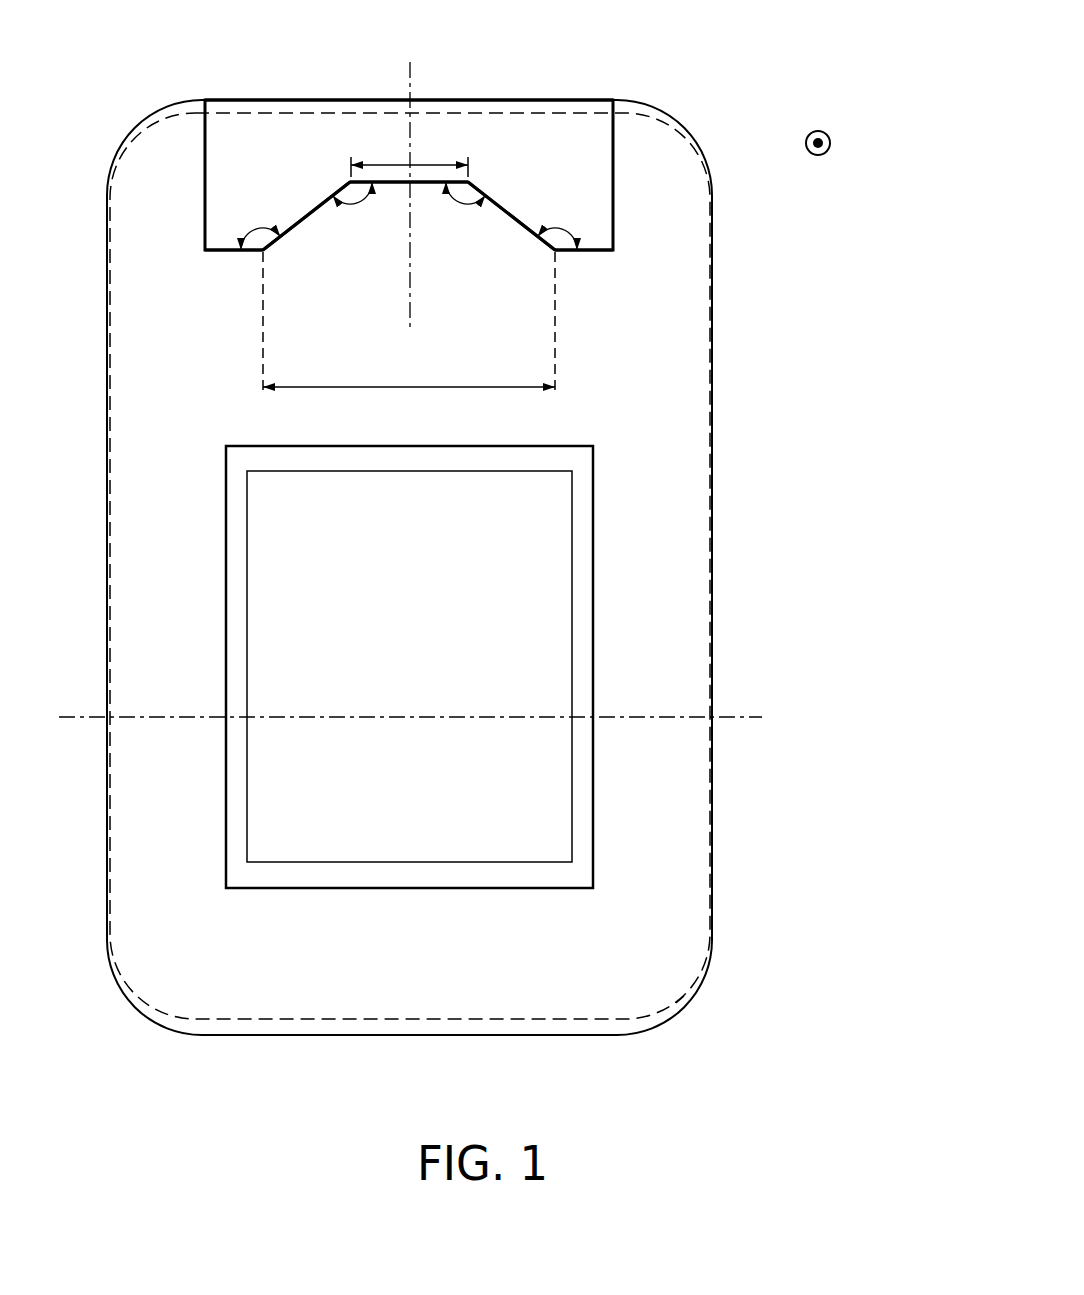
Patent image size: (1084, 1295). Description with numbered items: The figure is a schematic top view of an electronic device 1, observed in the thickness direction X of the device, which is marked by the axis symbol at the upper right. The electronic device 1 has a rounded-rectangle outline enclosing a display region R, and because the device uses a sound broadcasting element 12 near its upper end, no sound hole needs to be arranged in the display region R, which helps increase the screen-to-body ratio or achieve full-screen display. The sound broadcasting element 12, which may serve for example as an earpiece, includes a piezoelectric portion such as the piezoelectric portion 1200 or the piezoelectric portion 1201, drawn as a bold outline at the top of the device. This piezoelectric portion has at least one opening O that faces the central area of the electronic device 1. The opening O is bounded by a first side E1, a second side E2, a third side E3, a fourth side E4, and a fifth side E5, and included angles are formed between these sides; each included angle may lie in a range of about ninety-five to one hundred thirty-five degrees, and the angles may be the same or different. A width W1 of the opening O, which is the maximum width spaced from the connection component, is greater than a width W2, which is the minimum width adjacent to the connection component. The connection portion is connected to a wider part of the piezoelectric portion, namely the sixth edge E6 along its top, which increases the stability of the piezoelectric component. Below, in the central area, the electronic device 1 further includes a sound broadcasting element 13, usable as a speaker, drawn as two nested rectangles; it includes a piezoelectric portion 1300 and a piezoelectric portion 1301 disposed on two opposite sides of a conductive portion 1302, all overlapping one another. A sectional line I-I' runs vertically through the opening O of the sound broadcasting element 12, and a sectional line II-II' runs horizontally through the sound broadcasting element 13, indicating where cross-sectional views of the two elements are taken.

The electronic device 1 is at (485, 602).
The sound broadcasting element 12 is at (560, 147).
The piezoelectric portion 1200 is at (469, 125).
The piezoelectric portion 1201 is at (469, 125).
The sound broadcasting element 13 is at (541, 604).
The piezoelectric portion 1300 is at (586, 667).
The piezoelectric portion 1301 is at (586, 667).
The conductive portion 1302 is at (582, 628).
The first side E1 is at (228, 252).
The second side E2 is at (303, 220).
The third side E3 is at (399, 185).
The fourth side E4 is at (516, 222).
The fifth side E5 is at (588, 252).
The sixth edge E6 is at (304, 99).
The width W1 is at (409, 343).
The width W2 is at (409, 149).
The opening O is at (375, 270).
The display region R is at (687, 1011).
The sectional line I-I' I is at (412, 62).
The sectional line II-II' II is at (59, 719).
The thickness direction x is at (830, 141).